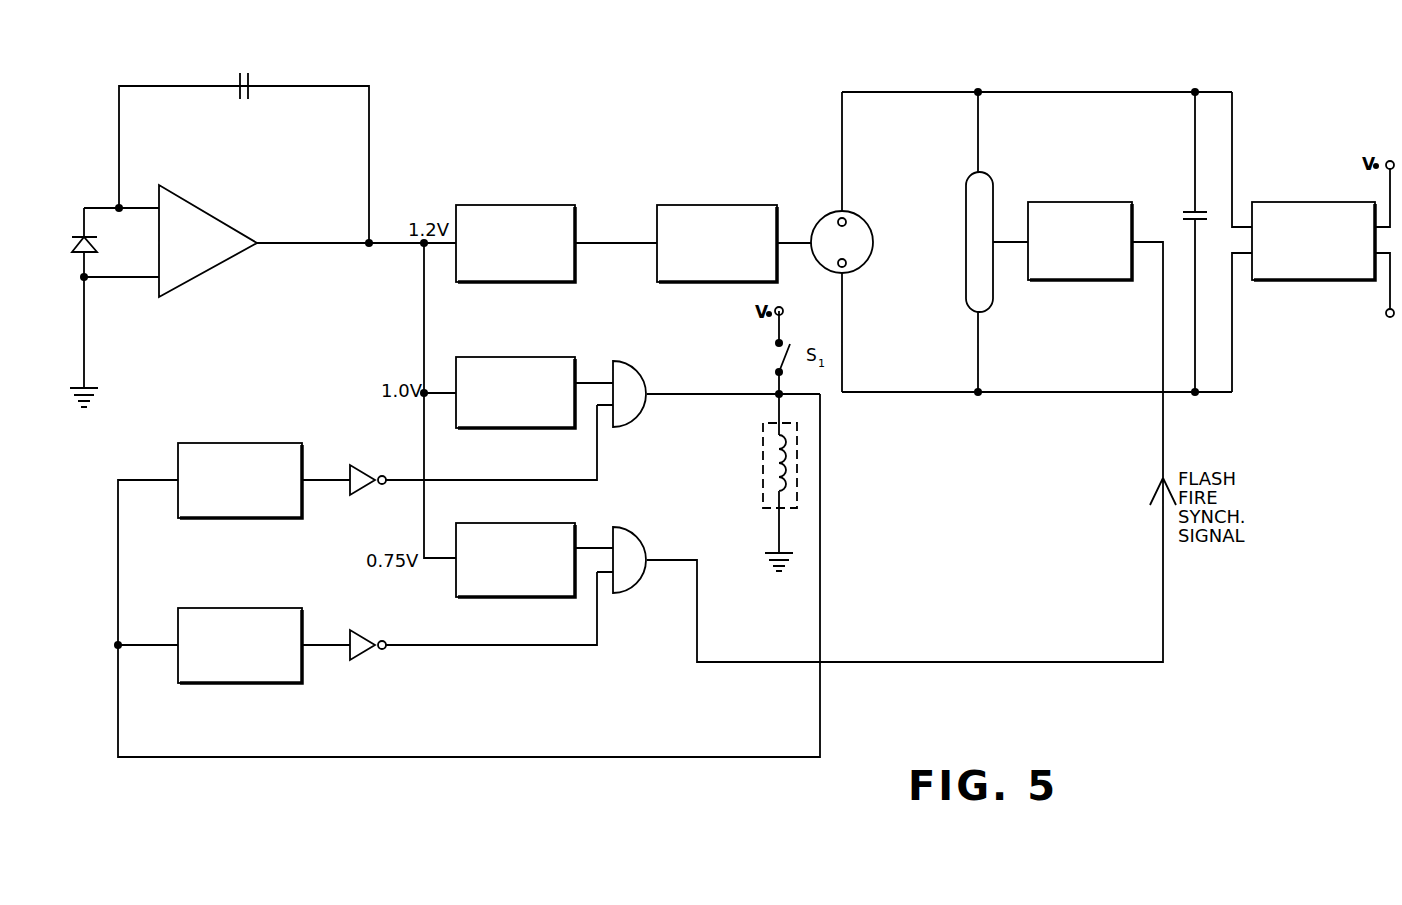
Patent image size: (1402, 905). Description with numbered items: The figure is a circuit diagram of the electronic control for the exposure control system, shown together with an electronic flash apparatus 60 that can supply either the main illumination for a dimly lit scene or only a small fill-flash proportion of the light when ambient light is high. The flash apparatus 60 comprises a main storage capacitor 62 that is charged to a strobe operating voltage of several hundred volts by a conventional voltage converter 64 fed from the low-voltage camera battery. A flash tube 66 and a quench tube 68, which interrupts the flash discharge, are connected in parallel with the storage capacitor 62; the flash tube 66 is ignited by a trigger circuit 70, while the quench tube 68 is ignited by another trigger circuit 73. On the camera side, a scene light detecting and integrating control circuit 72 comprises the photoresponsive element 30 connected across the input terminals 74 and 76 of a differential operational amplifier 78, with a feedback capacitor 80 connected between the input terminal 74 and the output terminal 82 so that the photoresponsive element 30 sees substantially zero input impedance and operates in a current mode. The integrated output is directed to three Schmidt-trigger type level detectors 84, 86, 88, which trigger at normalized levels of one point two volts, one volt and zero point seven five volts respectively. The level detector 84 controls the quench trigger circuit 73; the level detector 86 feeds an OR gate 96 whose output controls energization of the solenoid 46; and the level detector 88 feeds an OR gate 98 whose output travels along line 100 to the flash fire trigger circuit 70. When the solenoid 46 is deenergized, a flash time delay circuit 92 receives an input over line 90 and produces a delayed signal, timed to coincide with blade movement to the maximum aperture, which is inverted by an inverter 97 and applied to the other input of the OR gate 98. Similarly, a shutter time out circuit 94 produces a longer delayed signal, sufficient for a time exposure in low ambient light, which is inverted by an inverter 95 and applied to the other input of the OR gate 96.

The photoresponsive element 30 is at (72, 240).
The solenoid 46 is at (762, 470).
The electronic flash apparatus 60 is at (717, 138).
The main storage capacitor 62 is at (1182, 215).
The voltage converter 64 is at (1333, 202).
The flash tube 66 is at (966, 237).
The quench tube 68 is at (857, 215).
The trigger circuit 70 is at (1093, 280).
The scene light detecting and integrating control circuit 72 is at (382, 128).
The trigger circuit 73 is at (722, 205).
The input terminal 74 is at (147, 212).
The input terminal 76 is at (122, 280).
The operational amplifier 78 is at (195, 277).
The feedback capacitor 80 is at (247, 99).
The output terminal 82 is at (397, 246).
The level detector 84 is at (490, 205).
The level detector 86 is at (508, 357).
The level detector 88 is at (507, 523).
The line 90 is at (820, 717).
The flash time delay circuit 92 is at (222, 608).
The shutter time out circuit 94 is at (213, 443).
The inverter 95 is at (375, 487).
The OR gate 96 is at (647, 382).
The inverter 97 is at (363, 629).
The OR gate 98 is at (640, 534).
The line 100 is at (1087, 662).